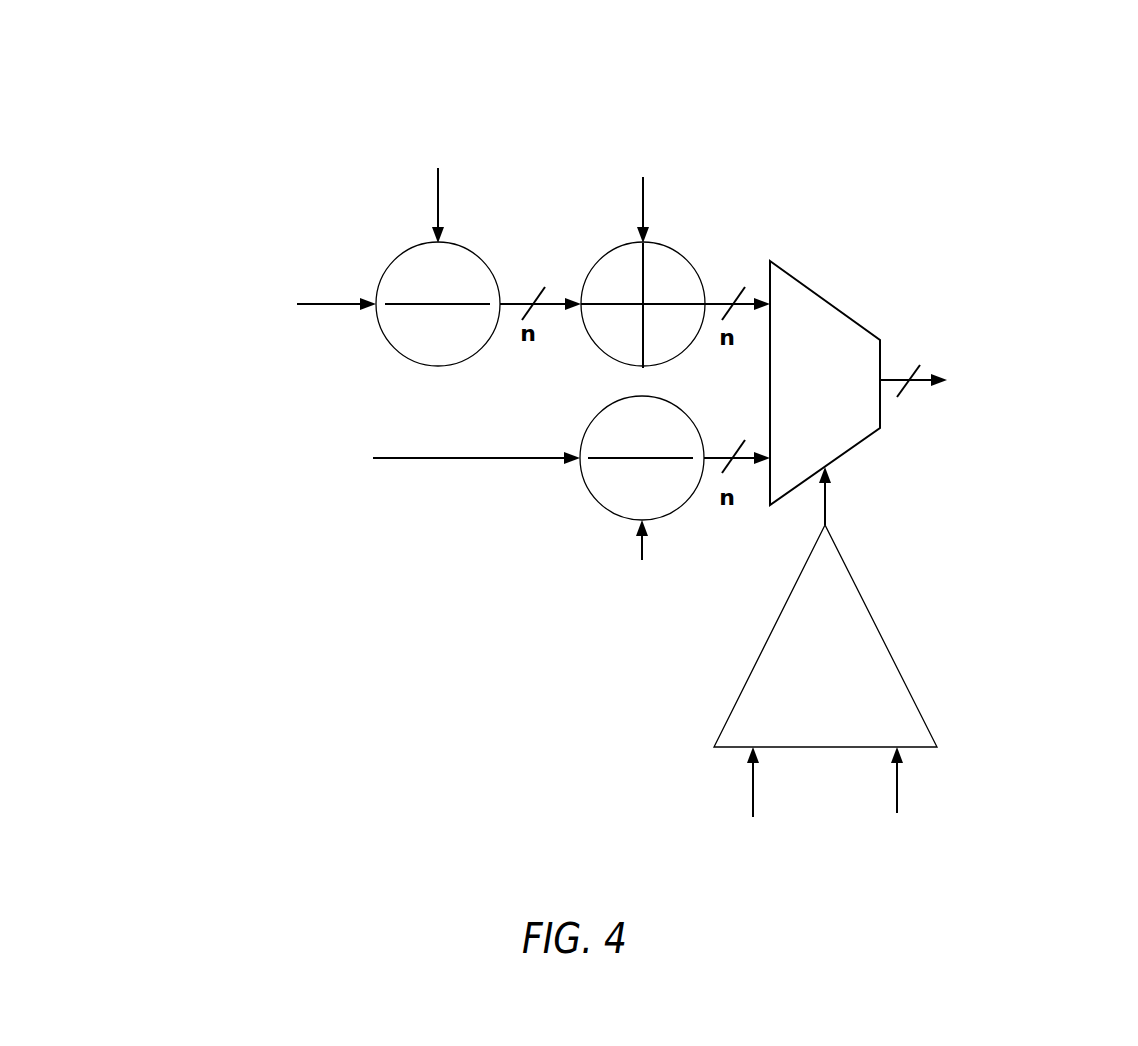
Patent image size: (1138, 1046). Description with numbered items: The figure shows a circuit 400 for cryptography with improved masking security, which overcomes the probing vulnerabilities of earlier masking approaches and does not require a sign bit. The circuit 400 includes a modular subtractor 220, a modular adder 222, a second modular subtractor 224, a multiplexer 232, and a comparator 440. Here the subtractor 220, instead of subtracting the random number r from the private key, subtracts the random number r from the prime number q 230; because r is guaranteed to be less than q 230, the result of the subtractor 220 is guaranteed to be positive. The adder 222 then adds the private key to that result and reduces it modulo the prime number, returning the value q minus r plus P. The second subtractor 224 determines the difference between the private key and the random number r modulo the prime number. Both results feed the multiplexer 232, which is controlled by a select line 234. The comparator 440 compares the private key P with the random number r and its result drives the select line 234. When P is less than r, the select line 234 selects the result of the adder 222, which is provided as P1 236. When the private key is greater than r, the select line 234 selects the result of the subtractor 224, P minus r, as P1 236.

The circuit 400 is at (1073, 99).
The modular subtractor 220 is at (400, 253).
The modular adder 222 is at (605, 255).
The modular subtractor 224 is at (605, 407).
The prime number q 230 is at (325, 298).
The multiplexer 232 is at (773, 497).
The select line 234 is at (830, 507).
The P1 236 is at (960, 365).
The comparator 440 is at (858, 602).